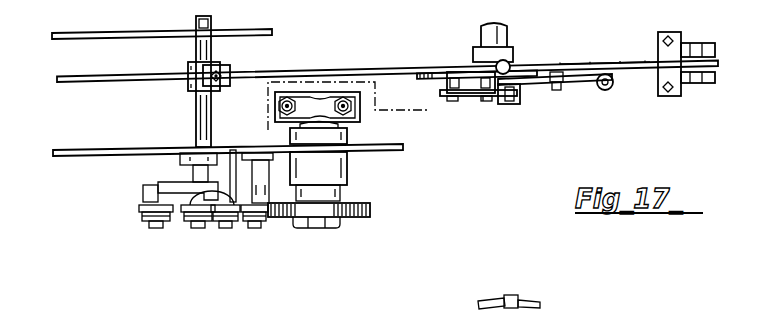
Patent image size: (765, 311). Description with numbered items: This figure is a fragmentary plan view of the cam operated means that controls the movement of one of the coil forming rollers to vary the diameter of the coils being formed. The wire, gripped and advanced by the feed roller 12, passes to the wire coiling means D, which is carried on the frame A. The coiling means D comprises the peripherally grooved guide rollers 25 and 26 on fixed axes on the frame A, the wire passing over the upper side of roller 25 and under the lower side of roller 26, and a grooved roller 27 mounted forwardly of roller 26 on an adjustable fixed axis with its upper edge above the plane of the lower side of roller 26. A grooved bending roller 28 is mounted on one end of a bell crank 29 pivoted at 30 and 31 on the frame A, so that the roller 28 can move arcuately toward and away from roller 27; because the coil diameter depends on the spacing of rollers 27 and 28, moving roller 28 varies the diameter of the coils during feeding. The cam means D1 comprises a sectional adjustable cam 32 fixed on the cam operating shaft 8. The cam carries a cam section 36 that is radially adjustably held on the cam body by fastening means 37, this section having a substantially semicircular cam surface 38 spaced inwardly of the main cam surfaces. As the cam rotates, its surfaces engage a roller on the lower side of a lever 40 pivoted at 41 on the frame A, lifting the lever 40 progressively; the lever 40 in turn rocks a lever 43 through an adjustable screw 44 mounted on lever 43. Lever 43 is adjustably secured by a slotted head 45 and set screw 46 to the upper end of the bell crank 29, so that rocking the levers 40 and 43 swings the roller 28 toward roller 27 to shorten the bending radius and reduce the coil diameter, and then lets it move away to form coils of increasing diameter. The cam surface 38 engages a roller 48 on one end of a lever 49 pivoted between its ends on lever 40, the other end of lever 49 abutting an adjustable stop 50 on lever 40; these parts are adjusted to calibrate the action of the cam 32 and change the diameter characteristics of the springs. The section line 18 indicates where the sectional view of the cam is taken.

The frame A is at (62, 45).
The wire coiling means D is at (140, 192).
The cam means D1 is at (447, 110).
The cam operating shaft 8 is at (482, 36).
The feed roller 12 is at (352, 216).
The section line 18 is at (720, 92).
The guide roller 25 is at (246, 225).
The guide roller 26 is at (223, 225).
The grooved roller 27 is at (190, 225).
The bending roller 28 is at (143, 225).
The bell crank 29 is at (182, 184).
The pivot 30 is at (194, 146).
The pivot 31 is at (195, 42).
The sectional adjustable cam 32 is at (450, 60).
The cam section 36 is at (472, 97).
The fastening means 37 is at (488, 99).
The cam surface 38 is at (440, 93).
The lever 40 is at (631, 63).
The pivot 41 is at (727, 29).
The lever 43 is at (343, 52).
The adjustable screw 44 is at (511, 62).
The slotted head 45 is at (277, 60).
The set screw 46 is at (253, 120).
The roller 48 is at (516, 95).
The lever 49 is at (578, 86).
The adjustable stop 50 is at (611, 87).